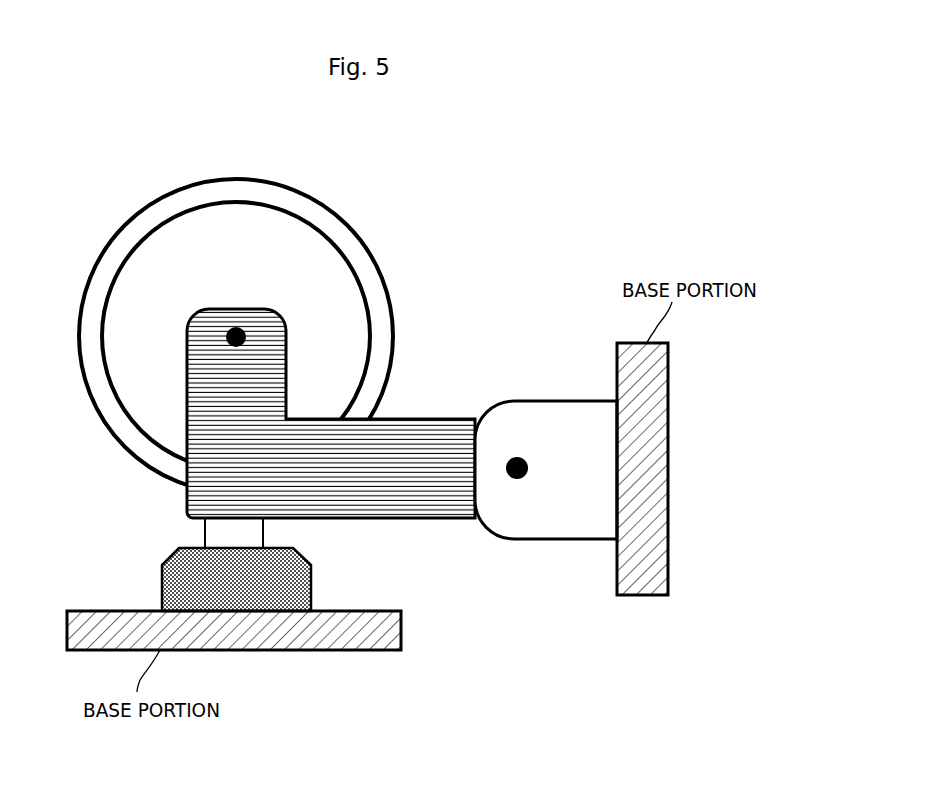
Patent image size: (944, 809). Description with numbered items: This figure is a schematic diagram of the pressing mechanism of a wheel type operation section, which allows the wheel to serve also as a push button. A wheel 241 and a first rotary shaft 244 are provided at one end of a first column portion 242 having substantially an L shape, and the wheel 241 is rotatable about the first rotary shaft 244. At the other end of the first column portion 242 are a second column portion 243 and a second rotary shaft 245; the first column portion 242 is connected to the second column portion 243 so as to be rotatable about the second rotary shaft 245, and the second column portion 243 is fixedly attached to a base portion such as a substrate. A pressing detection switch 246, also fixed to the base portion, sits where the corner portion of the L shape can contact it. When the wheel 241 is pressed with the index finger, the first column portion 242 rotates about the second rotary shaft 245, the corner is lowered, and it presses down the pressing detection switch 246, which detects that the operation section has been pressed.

The wheel 241 is at (315, 199).
The first column portion 242 is at (405, 424).
The second column portion 243 is at (515, 407).
The first rotary shaft 244 is at (240, 333).
The second rotary shaft 245 is at (517, 478).
The pressing detection switch 246 is at (175, 556).